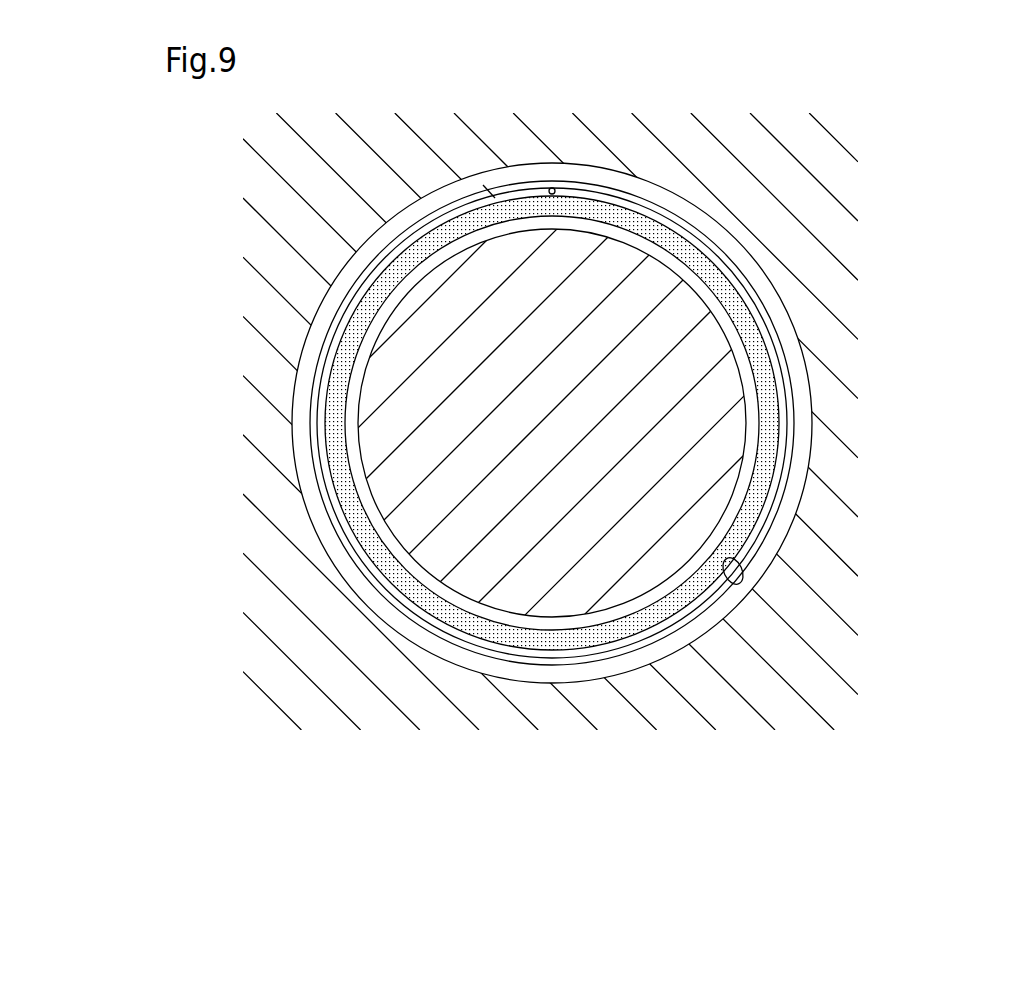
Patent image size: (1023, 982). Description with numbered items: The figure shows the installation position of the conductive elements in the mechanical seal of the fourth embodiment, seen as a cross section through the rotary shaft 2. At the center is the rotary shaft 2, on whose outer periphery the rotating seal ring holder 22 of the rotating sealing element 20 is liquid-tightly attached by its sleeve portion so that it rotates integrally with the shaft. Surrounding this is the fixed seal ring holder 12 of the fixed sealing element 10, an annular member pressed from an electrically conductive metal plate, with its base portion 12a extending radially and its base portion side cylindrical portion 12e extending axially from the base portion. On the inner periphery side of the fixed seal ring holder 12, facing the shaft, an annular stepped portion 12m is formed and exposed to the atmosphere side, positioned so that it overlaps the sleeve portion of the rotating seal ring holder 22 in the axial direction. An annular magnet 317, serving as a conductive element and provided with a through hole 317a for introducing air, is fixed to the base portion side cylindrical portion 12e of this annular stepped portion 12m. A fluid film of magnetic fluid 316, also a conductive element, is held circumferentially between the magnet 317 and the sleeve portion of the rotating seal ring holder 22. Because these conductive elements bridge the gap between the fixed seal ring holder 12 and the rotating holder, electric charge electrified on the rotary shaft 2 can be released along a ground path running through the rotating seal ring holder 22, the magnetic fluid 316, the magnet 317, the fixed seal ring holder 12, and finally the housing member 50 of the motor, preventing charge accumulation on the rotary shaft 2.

The rotary shaft 2 is at (733, 382).
The fixed sealing element 10 is at (552, 483).
The fixed seal ring holder 12 is at (466, 678).
The base portion 12a is at (587, 673).
The base portion side cylindrical portion 12e is at (666, 423).
The annular stepped portion 12m is at (737, 587).
The rotating sealing element 20 is at (651, 423).
The rotating seal ring holder 22 is at (764, 455).
The housing member 50 is at (758, 138).
The magnetic fluid 316 is at (557, 203).
The magnet 317 is at (483, 185).
The through hole 317a is at (557, 203).